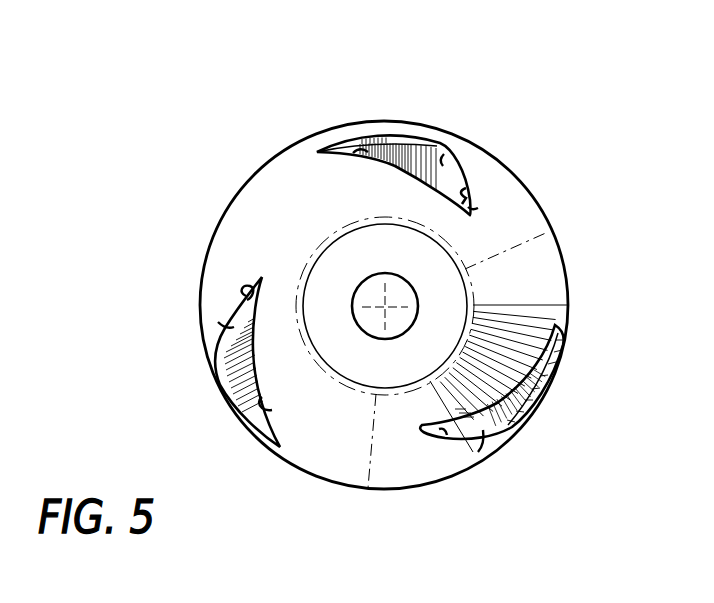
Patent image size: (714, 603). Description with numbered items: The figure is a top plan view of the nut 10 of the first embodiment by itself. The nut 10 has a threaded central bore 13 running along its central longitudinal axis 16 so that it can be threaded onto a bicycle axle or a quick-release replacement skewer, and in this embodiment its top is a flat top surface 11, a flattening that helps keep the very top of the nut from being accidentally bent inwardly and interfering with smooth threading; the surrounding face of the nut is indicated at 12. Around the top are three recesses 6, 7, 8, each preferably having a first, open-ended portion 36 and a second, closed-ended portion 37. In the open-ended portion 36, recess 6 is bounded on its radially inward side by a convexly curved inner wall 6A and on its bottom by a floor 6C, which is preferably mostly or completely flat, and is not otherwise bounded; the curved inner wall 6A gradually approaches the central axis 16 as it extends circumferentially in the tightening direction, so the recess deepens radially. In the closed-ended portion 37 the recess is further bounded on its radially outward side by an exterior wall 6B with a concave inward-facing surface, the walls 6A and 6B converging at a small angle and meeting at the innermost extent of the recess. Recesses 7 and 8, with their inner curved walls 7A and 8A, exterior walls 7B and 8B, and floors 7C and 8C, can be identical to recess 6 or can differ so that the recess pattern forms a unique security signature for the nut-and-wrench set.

The nut 10 is at (262, 135).
The recess 6 is at (407, 135).
The recess 7 is at (517, 427).
The recess 8 is at (217, 363).
The convexly curved inner wall 6A is at (353, 153).
The exterior wall 6B is at (466, 188).
The floor 6C is at (444, 154).
The inner curved wall 7A is at (518, 372).
The exterior wall 7B is at (447, 435).
The floor 7C is at (478, 452).
The inner curved wall 8A is at (262, 397).
The exterior wall 8B is at (246, 296).
The floor 8C is at (218, 322).
The flat top surface 11 is at (430, 272).
The disc face 12 is at (348, 435).
The threaded central bore 13 is at (414, 328).
The central longitudinal axis 16 is at (384, 305).
The first and open-ended portion 36 is at (388, 140).
The second and closed-ended portion 37 is at (472, 210).